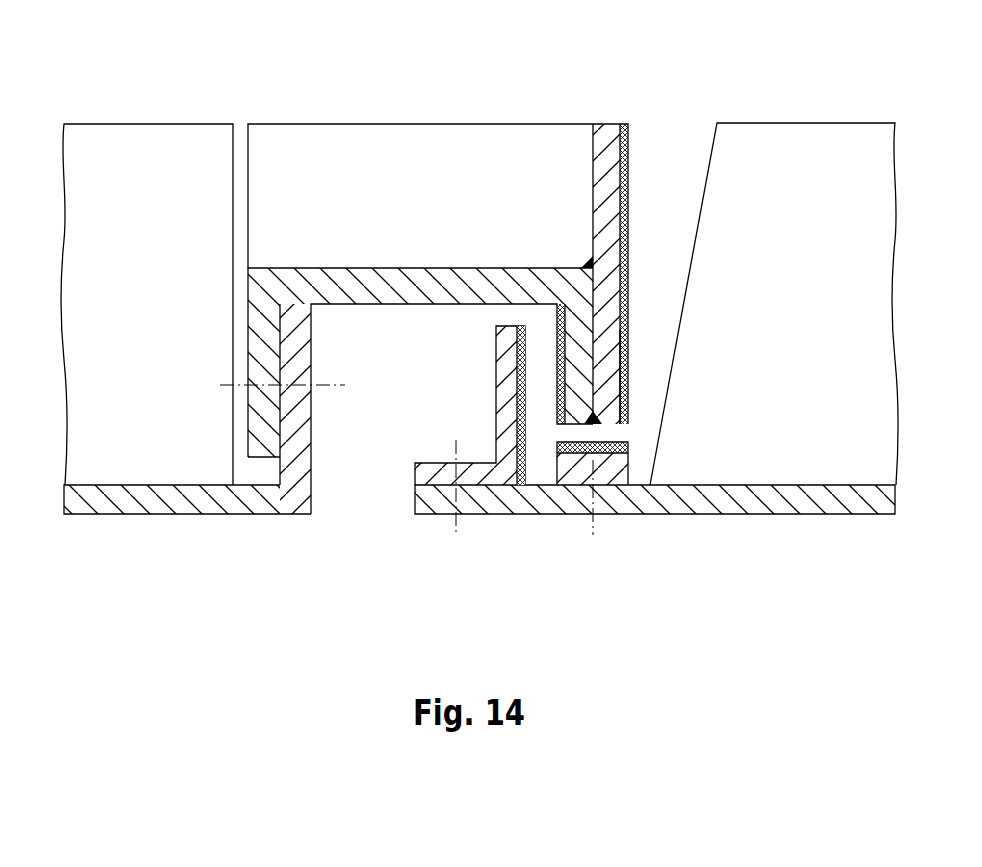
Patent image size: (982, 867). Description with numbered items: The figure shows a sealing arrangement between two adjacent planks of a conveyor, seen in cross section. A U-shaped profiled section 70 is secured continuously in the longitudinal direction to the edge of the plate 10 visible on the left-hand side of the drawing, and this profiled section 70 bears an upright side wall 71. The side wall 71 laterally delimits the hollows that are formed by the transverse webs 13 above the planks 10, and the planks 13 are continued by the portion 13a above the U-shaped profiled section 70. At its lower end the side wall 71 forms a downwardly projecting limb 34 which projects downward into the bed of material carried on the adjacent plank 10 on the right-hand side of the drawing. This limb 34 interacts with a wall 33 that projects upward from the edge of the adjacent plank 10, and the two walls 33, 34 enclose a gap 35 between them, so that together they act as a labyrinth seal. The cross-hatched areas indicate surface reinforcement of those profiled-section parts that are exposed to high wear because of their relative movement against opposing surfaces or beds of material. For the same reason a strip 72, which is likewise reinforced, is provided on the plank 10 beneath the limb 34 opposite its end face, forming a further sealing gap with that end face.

The plate 10 is at (137, 492).
The transverse web 13 is at (138, 147).
The continuation of the plank 13a is at (337, 147).
The wall 33 is at (505, 342).
The limb 34 is at (602, 378).
The gap 35 is at (540, 380).
The U-shaped profiled section 70 is at (435, 292).
The side wall 71 is at (606, 160).
The strip 72 is at (607, 487).